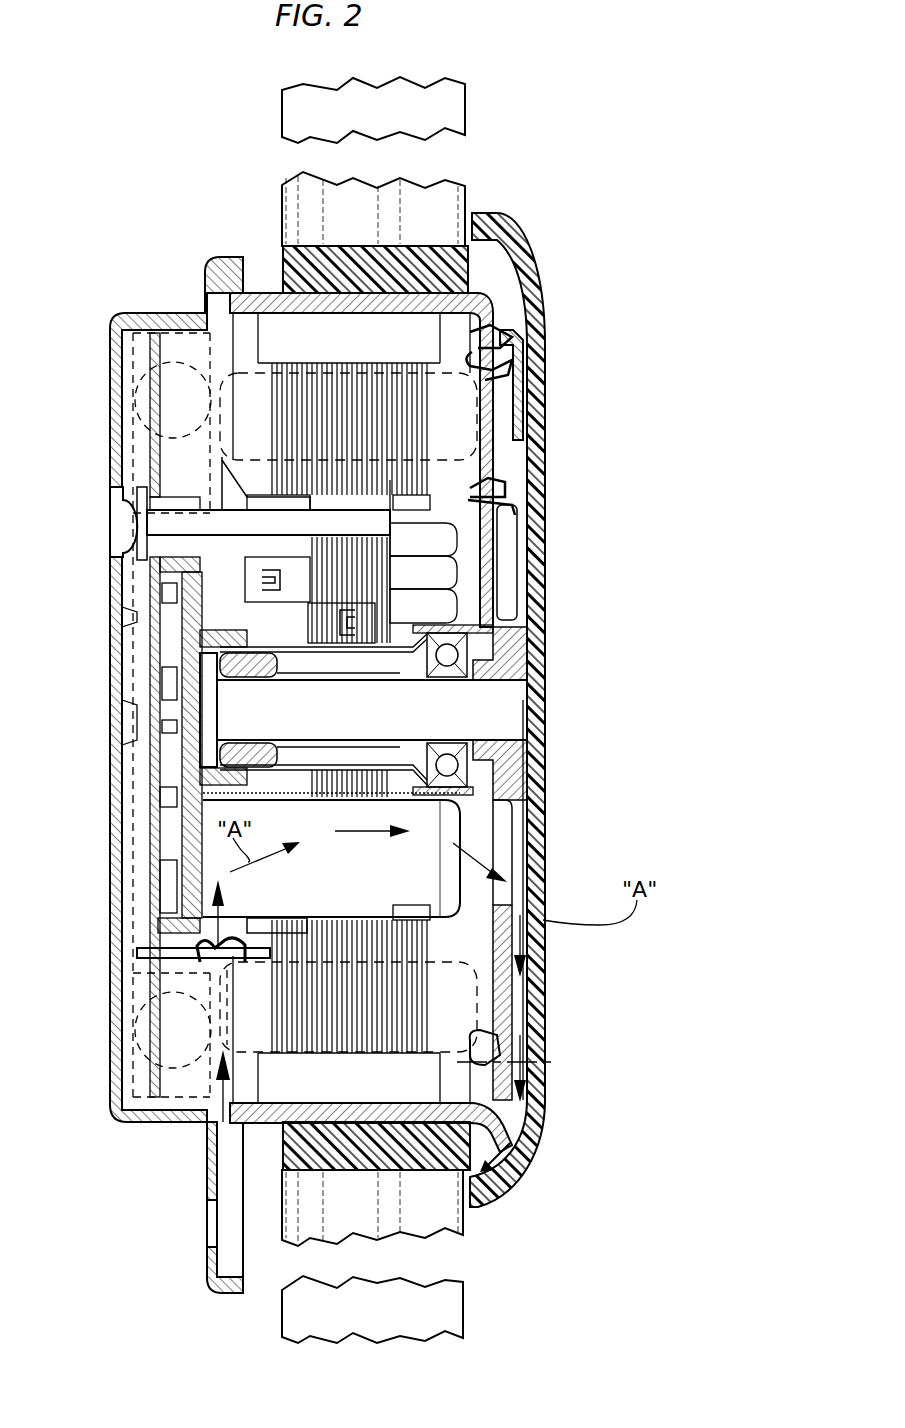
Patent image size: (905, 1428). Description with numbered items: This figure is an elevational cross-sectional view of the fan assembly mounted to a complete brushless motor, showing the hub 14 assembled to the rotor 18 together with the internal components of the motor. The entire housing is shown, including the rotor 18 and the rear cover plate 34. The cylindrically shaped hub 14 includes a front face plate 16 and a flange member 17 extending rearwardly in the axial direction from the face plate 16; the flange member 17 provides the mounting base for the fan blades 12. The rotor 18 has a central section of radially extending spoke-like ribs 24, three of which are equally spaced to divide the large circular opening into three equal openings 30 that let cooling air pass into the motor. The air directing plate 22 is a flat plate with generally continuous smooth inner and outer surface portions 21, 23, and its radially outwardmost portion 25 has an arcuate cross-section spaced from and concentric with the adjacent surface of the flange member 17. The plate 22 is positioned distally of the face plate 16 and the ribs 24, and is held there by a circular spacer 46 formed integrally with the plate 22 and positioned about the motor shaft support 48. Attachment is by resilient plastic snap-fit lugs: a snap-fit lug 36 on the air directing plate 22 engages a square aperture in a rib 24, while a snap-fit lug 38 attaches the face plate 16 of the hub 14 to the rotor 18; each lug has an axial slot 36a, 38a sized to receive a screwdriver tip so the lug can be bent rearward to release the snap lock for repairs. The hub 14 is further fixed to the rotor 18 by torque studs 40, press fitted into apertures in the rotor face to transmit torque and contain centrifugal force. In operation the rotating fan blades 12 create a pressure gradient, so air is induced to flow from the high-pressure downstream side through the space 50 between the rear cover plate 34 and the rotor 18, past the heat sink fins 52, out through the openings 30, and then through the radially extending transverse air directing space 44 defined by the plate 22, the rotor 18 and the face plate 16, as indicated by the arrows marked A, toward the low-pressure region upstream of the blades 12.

The fan blades 12 is at (376, 710).
The hub 14 is at (522, 1103).
The front face plate 16 is at (505, 333).
The flange member 17 is at (432, 245).
The rotor 18 is at (513, 417).
The inner surface portion 21 is at (533, 422).
The air directing plate 22 is at (543, 587).
The outer surface portion 23 is at (542, 687).
The ribs 24 is at (503, 553).
The radially outwardmost portion 25 is at (523, 257).
The openings 30 is at (503, 827).
The rear cover plate 34 is at (110, 912).
The snap-fit lugs 36 is at (517, 473).
The axial slot 36a is at (537, 503).
The snap-fit lugs 38 is at (490, 347).
The axial slot 38a is at (510, 353).
The torque studs 40 is at (485, 1048).
The transverse air directing space 44 is at (518, 890).
The circular spacer 46 is at (512, 800).
The motor shaft support 48 is at (512, 660).
The space 50 is at (225, 1125).
The heat sink fins 52 is at (331, 855).